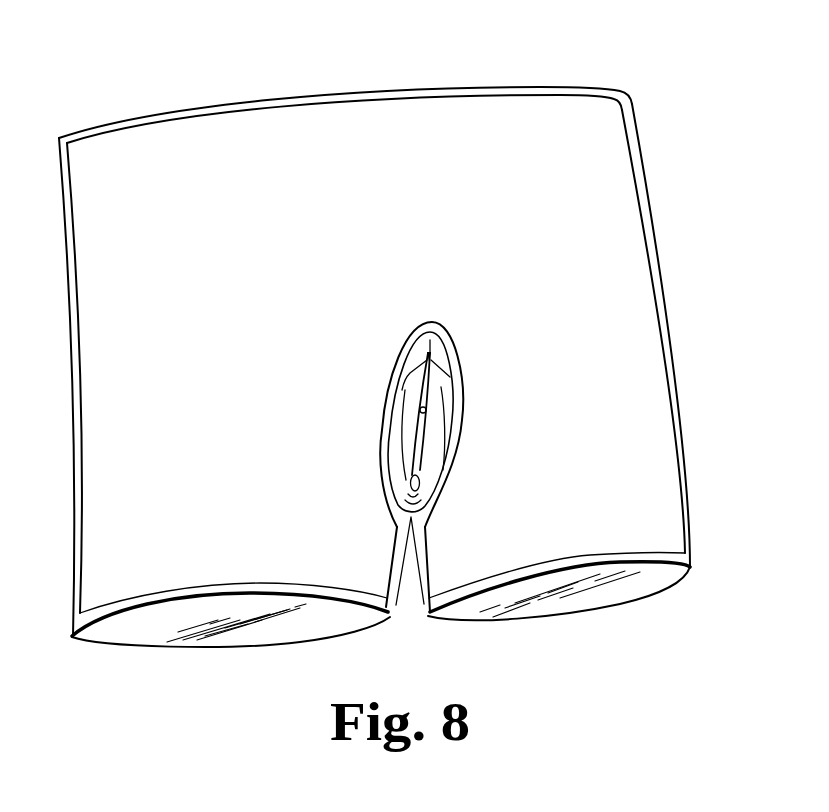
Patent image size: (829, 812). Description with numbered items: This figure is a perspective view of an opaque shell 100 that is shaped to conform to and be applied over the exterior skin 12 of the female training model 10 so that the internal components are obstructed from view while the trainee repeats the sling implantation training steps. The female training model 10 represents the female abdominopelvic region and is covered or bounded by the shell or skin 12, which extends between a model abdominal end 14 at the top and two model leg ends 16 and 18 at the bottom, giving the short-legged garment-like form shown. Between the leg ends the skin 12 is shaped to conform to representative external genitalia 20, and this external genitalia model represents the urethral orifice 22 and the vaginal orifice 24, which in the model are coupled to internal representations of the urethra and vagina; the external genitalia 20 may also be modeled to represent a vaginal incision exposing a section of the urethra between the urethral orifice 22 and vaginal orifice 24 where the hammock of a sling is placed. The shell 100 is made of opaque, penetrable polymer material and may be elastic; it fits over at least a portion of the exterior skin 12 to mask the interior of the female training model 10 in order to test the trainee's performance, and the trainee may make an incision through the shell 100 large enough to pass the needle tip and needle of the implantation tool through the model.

The female training model 10 is at (80, 689).
The skin 12 is at (637, 133).
The model abdominal end 14 is at (440, 80).
The model leg end 16 is at (147, 630).
The model leg end 18 is at (566, 606).
The external genitalia 20 is at (462, 435).
The urethral orifice 22 is at (427, 410).
The vaginal orifice 24 is at (420, 488).
The shell 100 is at (610, 228).